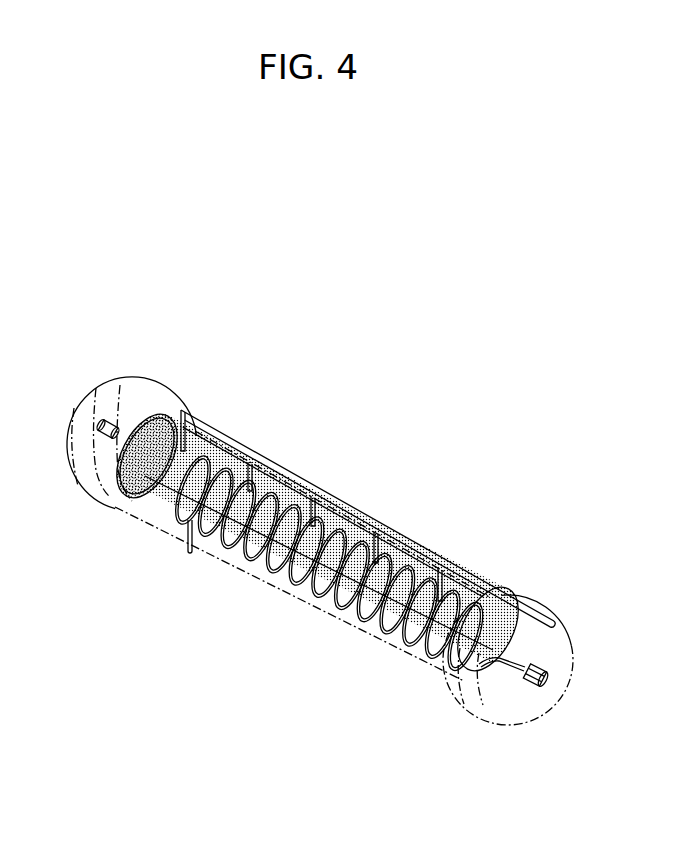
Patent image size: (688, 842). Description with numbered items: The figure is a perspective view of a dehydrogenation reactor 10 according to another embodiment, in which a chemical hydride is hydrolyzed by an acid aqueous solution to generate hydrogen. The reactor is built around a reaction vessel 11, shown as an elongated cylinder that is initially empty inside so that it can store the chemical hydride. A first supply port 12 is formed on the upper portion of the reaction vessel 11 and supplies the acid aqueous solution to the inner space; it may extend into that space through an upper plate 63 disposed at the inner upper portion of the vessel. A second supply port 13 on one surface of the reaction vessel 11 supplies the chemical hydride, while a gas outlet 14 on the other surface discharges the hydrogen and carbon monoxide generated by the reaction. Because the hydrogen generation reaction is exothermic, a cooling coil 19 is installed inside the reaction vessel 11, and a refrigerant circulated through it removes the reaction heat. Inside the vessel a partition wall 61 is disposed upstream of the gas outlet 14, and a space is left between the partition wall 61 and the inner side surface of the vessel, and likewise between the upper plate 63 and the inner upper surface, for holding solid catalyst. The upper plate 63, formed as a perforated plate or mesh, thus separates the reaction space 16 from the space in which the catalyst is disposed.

The dehydrogenation reactor 10 is at (400, 425).
The reaction vessel 11 is at (393, 641).
The first supply port 12 is at (418, 544).
The second supply port 13 is at (540, 673).
The gas outlet 14 is at (90, 414).
The reaction space 16 is at (280, 573).
The cooling coil 19 is at (347, 618).
The partition wall 61 is at (157, 497).
The upper plate 63 is at (207, 458).